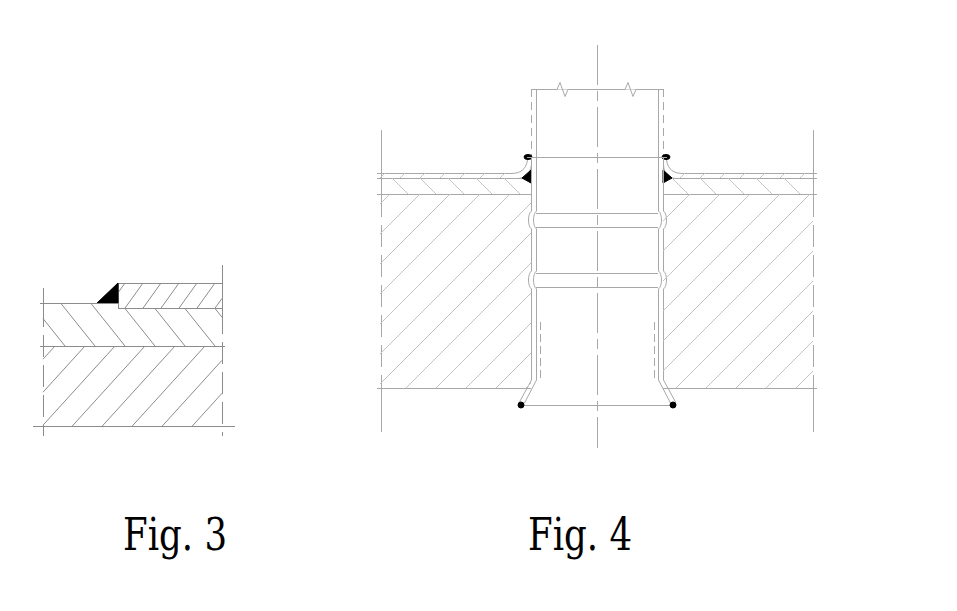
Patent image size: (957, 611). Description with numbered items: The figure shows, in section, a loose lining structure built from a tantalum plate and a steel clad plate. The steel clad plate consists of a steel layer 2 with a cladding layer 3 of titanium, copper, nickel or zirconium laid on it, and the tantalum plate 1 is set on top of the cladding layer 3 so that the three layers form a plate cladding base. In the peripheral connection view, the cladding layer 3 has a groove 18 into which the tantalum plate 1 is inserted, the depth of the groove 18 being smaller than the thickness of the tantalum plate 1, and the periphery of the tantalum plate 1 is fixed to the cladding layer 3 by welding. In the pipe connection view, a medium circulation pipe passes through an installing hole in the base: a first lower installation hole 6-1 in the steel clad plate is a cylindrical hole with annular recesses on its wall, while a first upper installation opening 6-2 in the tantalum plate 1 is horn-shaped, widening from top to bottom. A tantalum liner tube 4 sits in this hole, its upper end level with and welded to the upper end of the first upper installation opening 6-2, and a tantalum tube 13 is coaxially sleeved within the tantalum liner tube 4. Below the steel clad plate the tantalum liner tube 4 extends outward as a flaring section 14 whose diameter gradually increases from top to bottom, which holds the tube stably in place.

In FIG. 3, the tantalum plate 1 is at (210, 296).
In FIG. 4, the tantalum plate 1 is at (788, 175).
In FIG. 3, the steel layer 2 is at (210, 417).
In FIG. 4, the steel layer 2 is at (802, 310).
In FIG. 3, the cladding layer 3 is at (185, 332).
In FIG. 4, the cladding layer 3 is at (788, 186).
In FIG. 4, the tantalum liner tube 4 is at (672, 167).
In FIG. 4, the first lower installation hole 6-1 is at (668, 318).
In FIG. 4, the first upper installation opening 6-2 is at (524, 172).
In FIG. 4, the tantalum tube 13 is at (531, 89).
In FIG. 4, the flaring section 14 is at (665, 404).
In FIG. 3, the groove 18 is at (122, 292).